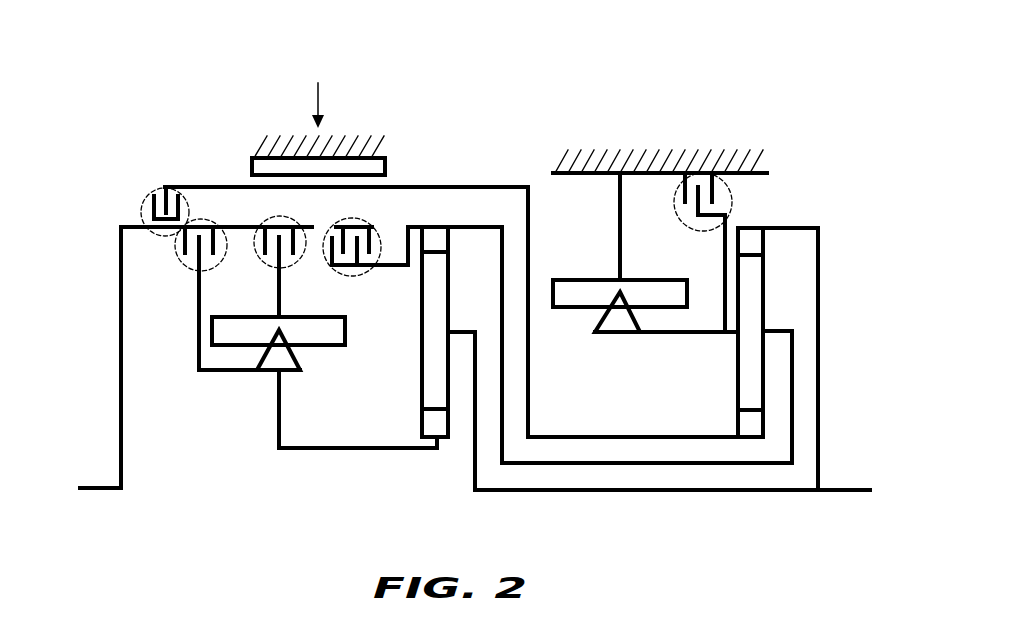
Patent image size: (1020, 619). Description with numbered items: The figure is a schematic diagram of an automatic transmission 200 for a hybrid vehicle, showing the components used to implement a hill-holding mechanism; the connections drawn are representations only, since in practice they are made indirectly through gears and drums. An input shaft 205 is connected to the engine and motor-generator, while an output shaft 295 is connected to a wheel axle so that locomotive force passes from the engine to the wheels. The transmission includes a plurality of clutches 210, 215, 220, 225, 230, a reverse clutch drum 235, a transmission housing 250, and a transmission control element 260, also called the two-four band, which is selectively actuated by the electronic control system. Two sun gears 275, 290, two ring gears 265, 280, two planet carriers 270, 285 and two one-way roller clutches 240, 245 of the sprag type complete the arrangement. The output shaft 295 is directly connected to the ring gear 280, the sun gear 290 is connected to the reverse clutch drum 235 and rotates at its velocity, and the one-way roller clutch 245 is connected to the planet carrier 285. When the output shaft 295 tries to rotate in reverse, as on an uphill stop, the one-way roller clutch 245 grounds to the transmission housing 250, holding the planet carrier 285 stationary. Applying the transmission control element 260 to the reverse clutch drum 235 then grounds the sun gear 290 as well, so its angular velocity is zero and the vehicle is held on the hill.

The automatic transmission 200 is at (598, 60).
The input shaft 205 is at (97, 487).
The clutch 210 is at (144, 194).
The clutch 215 is at (215, 221).
The clutch 220 is at (268, 262).
The clutch 225 is at (344, 275).
The clutch 230 is at (684, 223).
The reverse clutch drum 235 is at (430, 185).
The one-way roller clutch 240 is at (338, 317).
The one-way roller clutch 245 is at (646, 279).
The transmission housing 250 is at (754, 170).
The transmission control element 260 is at (253, 157).
The ring gear 265 is at (435, 226).
The planet carrier 270 is at (421, 362).
The sun gear 275 is at (421, 418).
The ring gear 280 is at (753, 227).
The planet carrier 285 is at (737, 363).
The sun gear 290 is at (737, 420).
The output shaft 295 is at (843, 489).